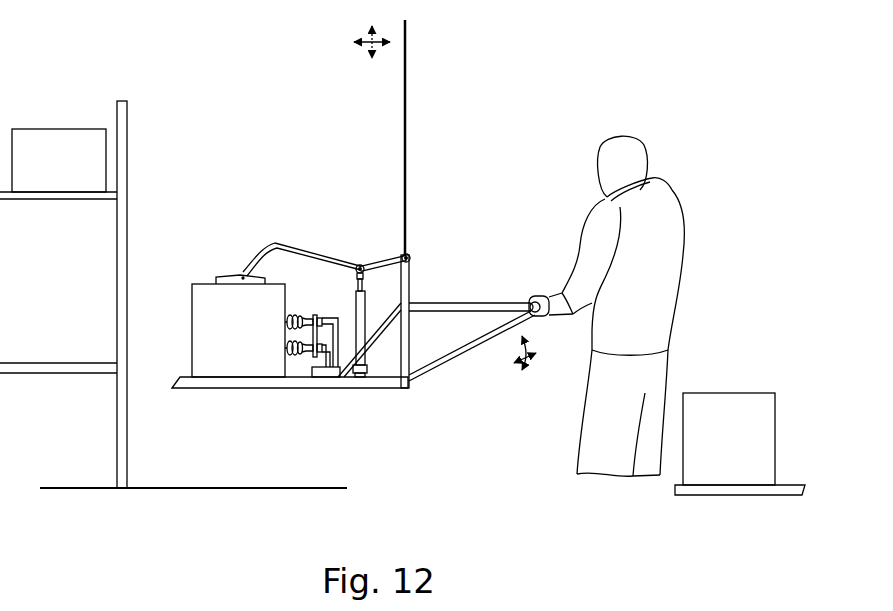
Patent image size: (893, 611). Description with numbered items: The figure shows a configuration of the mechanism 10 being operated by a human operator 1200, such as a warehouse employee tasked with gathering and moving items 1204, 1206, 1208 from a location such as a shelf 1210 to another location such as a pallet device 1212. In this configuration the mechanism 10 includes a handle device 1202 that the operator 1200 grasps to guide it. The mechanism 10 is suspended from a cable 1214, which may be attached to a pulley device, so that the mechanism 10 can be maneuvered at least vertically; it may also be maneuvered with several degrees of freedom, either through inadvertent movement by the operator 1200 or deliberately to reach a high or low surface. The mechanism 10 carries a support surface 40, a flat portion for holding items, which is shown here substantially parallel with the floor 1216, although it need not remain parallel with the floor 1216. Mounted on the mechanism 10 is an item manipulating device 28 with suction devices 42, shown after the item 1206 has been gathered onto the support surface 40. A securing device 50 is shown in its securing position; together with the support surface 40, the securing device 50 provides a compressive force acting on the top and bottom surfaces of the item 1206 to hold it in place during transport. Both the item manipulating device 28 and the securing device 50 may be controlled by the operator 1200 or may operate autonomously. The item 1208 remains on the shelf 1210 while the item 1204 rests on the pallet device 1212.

The mechanism 10 is at (226, 396).
The item manipulating device 28 is at (315, 317).
The support surface 40 is at (297, 385).
The suction devices 42 is at (293, 316).
The securing device 50 is at (377, 260).
The human operator 1200 is at (672, 190).
The handle device 1202 is at (464, 302).
The item 1204 is at (729, 439).
The item 1206 is at (238, 326).
The item 1208 is at (59, 160).
The shelf 1210 is at (68, 362).
The pallet device 1212 is at (786, 485).
The cable 1214 is at (405, 104).
The floor 1216 is at (258, 488).